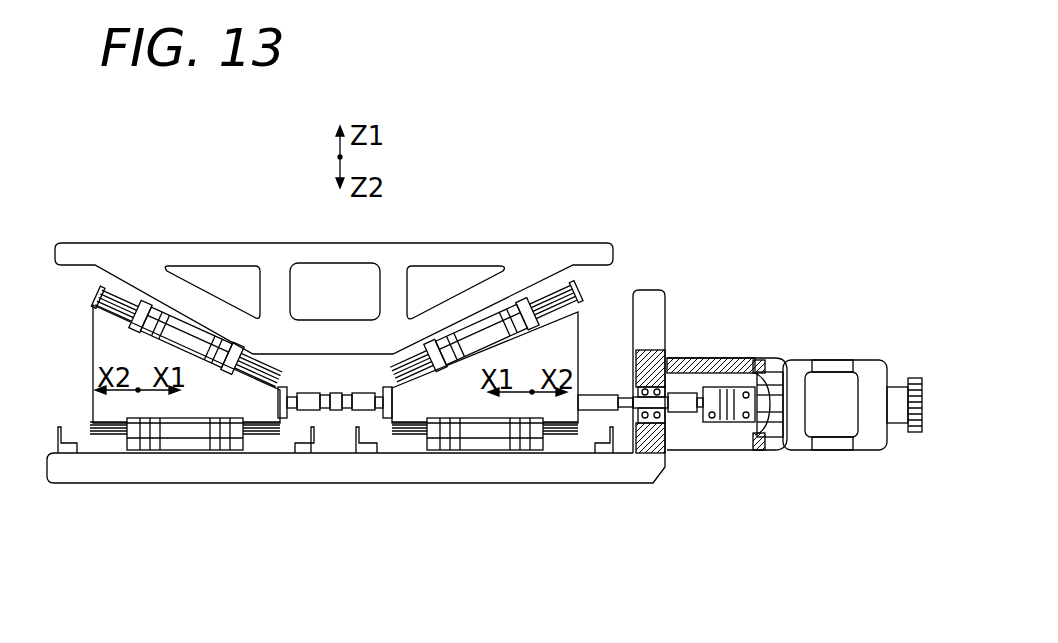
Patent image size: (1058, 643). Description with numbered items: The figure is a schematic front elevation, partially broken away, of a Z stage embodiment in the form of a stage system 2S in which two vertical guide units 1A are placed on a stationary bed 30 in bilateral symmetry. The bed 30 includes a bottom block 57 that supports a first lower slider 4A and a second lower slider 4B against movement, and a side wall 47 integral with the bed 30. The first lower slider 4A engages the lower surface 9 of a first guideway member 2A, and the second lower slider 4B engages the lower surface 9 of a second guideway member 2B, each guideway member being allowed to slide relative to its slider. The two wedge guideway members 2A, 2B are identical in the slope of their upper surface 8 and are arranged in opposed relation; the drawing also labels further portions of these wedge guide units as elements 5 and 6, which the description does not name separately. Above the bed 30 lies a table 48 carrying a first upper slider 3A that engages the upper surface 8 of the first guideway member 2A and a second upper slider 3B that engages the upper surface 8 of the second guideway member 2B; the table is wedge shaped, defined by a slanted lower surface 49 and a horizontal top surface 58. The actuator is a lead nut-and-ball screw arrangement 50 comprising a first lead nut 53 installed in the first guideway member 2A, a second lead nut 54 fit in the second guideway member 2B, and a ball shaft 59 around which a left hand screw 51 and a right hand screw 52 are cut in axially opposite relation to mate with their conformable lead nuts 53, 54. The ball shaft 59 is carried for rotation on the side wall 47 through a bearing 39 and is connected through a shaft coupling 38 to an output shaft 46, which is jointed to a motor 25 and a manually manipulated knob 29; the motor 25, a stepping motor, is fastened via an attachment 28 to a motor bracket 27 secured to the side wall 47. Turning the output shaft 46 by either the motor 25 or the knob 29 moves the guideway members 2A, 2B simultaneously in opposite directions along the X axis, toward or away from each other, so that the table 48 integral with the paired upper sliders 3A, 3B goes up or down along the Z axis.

The vertical guide unit 1A is at (126, 300).
The first guideway member 2A is at (572, 330).
The second guideway member 2B is at (118, 421).
The stage system 2S is at (477, 222).
The first upper slider 3A is at (492, 328).
The second upper slider 3B is at (190, 318).
The first lower slider 4A is at (486, 448).
The second lower slider 4B is at (184, 448).
The piston rod 5 is at (120, 305).
The piston rod 6 is at (124, 436).
The upper surface 8 is at (243, 345).
The lower surface 9 is at (262, 436).
The motor 25 is at (836, 382).
The motor bracket 27 is at (722, 360).
The attachment 28 is at (778, 448).
The manually manipulated knob 29 is at (913, 385).
The stationary bed 30 is at (600, 473).
The shaft coupling 38 is at (732, 422).
The bearing 39 is at (662, 372).
The output shaft 46 is at (766, 395).
The side wall 47 is at (652, 300).
The table 48 is at (428, 260).
The lower surface 49 is at (188, 292).
The lead nut-and-ball screw arrangement 50 is at (300, 420).
The left hand screw 51 is at (340, 412).
The right hand screw 52 is at (325, 410).
The first lead nut 53 is at (393, 388).
The second lead nut 54 is at (282, 388).
The bottom block 57 is at (300, 473).
The top surface 58 is at (318, 246).
The ball shaft 59 is at (597, 402).